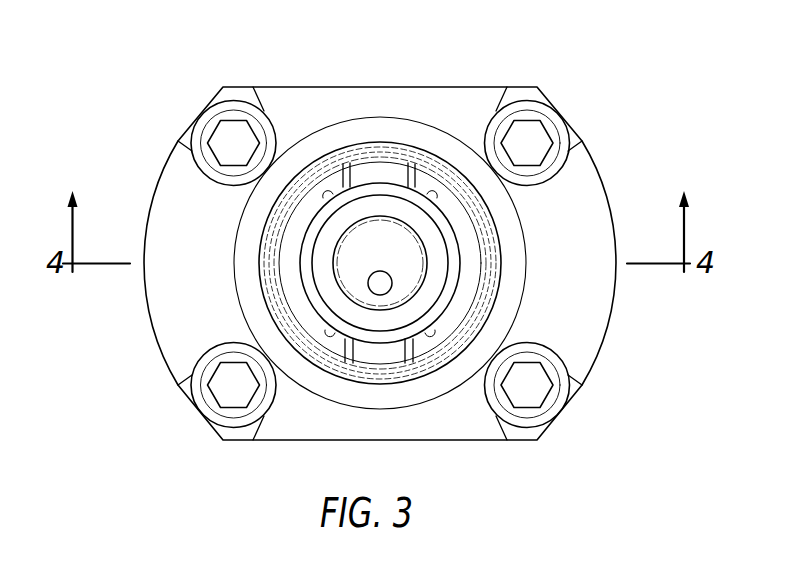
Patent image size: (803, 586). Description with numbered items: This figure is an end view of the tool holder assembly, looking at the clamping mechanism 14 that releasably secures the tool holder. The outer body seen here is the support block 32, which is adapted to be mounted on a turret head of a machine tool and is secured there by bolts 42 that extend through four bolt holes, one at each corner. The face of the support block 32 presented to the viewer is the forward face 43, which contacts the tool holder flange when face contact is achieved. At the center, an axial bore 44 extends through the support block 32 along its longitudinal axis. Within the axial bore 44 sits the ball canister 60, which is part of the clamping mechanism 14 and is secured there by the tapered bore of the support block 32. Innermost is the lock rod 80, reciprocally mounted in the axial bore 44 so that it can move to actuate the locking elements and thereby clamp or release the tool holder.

The clamping mechanism 14 is at (404, 224).
The support block 32 is at (437, 87).
The bolts 42 is at (525, 108).
The forward face 43 is at (385, 160).
The axial bore 44 is at (362, 190).
The ball canister 60 is at (377, 168).
The lock rod 80 is at (416, 259).